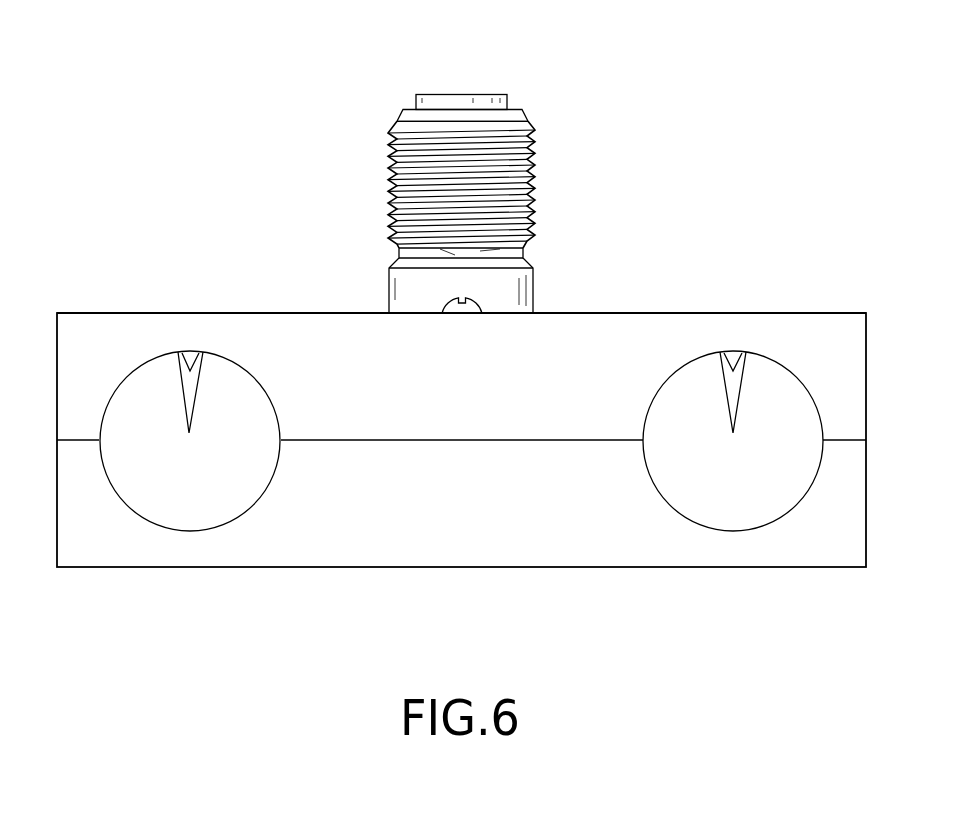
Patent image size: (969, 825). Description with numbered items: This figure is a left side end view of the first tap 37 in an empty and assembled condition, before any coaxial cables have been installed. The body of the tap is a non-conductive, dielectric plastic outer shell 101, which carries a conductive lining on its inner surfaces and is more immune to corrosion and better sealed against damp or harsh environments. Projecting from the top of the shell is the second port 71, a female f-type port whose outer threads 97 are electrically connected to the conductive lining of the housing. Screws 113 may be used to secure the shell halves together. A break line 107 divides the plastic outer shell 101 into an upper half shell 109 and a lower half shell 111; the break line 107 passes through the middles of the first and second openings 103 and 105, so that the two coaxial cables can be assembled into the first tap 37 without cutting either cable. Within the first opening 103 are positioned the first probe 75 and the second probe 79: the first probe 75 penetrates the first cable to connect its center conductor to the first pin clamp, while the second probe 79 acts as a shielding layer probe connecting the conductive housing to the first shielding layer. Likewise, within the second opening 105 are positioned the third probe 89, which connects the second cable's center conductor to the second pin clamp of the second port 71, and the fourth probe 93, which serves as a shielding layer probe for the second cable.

The first tap 37 is at (799, 249).
The second port 71 is at (450, 176).
The outer threads 97 is at (390, 178).
The screws 113 is at (478, 302).
The plastic outer shell 101 is at (678, 313).
The break line 107 is at (527, 440).
The upper half shell 109 is at (468, 388).
The lower half shell 111 is at (491, 516).
The second opening 105 is at (260, 497).
The fourth probe 93 is at (188, 355).
The third probe 89 is at (189, 390).
The first opening 103 is at (653, 487).
The second probe 79 is at (733, 352).
The first probe 75 is at (735, 388).